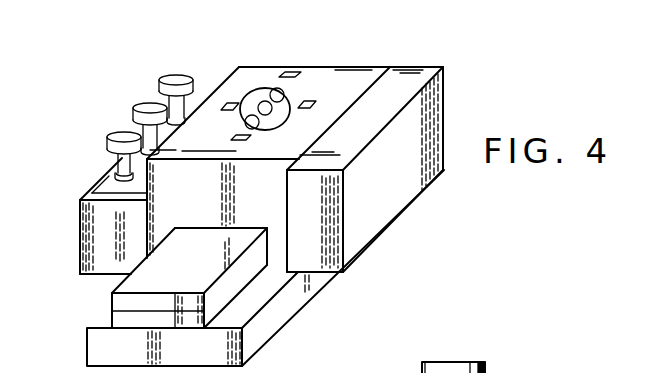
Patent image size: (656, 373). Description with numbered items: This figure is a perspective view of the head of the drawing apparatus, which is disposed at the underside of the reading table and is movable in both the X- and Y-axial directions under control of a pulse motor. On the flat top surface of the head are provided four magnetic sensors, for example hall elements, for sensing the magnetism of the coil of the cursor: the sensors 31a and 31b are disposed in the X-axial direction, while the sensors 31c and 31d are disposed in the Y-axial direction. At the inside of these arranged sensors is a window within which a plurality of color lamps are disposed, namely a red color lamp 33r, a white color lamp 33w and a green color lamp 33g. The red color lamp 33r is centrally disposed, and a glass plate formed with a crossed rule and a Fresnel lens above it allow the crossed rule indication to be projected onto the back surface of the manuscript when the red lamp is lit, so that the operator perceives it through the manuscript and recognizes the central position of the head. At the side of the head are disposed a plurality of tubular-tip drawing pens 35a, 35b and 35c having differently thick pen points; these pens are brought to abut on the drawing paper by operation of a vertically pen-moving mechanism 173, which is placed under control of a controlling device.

The vertically pen-moving mechanism 173 is at (81, 242).
The tubular-tip drawing pen 35a is at (108, 146).
The tubular-tip drawing pen 35b is at (135, 118).
The tubular-tip drawing pen 35c is at (161, 87).
The green color lamp 33g is at (244, 110).
The red color lamp 33r is at (265, 101).
The white color lamp 33w is at (279, 89).
The magnetic sensor 31a is at (222, 109).
The magnetic sensor 31b is at (312, 100).
The magnetic sensor 31c is at (299, 71).
The magnetic sensor 31d is at (249, 140).